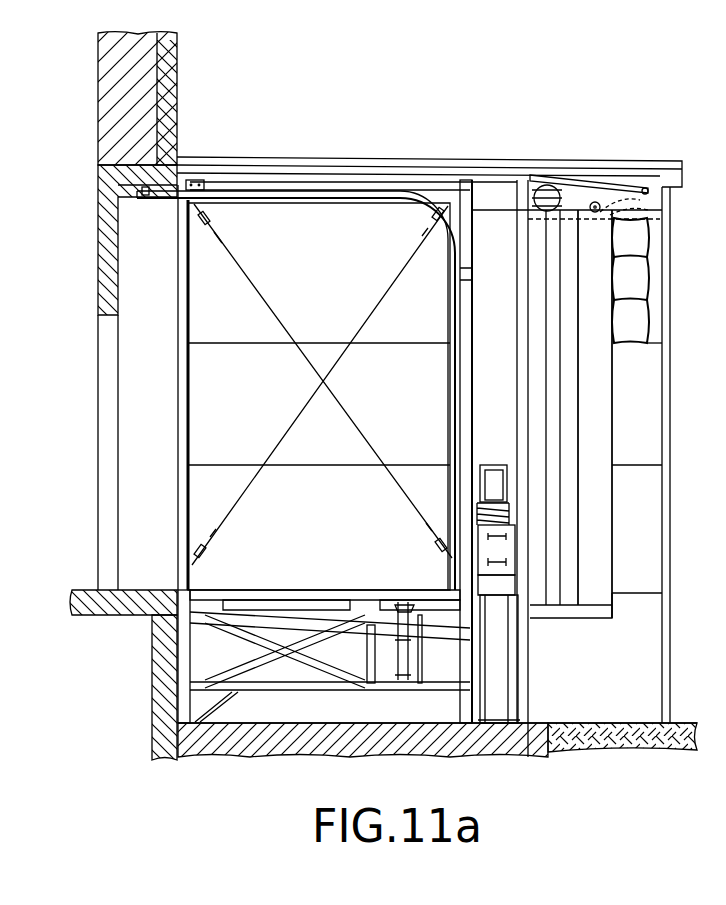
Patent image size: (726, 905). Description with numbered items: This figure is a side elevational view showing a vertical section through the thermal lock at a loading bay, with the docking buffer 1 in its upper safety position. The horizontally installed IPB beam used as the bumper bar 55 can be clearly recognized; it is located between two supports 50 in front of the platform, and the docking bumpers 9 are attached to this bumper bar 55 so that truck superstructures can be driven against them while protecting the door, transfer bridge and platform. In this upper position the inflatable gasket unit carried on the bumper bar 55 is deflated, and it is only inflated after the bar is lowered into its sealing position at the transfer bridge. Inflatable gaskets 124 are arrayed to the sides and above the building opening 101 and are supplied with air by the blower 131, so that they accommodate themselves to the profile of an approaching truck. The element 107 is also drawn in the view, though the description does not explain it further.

The blower 131 is at (548, 192).
The inflatable gasket 124 is at (630, 275).
The building opening 101 is at (597, 413).
The docking buffer 1 is at (511, 506).
The docking bumper 9 is at (511, 546).
The bumper bar 55 is at (506, 562).
The bracket 107 is at (553, 610).
The support 50 is at (493, 676).